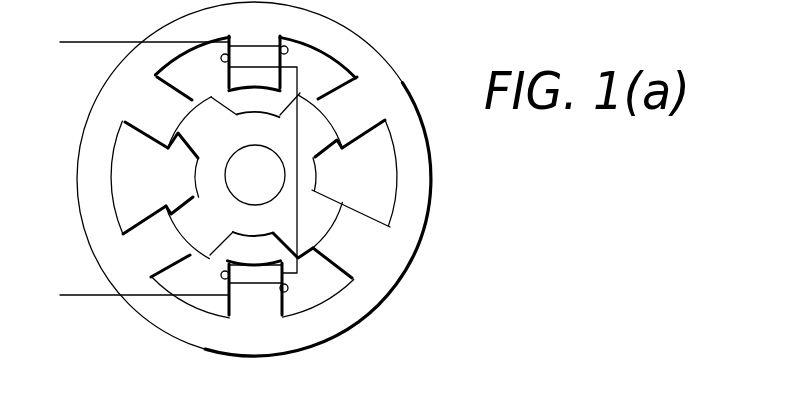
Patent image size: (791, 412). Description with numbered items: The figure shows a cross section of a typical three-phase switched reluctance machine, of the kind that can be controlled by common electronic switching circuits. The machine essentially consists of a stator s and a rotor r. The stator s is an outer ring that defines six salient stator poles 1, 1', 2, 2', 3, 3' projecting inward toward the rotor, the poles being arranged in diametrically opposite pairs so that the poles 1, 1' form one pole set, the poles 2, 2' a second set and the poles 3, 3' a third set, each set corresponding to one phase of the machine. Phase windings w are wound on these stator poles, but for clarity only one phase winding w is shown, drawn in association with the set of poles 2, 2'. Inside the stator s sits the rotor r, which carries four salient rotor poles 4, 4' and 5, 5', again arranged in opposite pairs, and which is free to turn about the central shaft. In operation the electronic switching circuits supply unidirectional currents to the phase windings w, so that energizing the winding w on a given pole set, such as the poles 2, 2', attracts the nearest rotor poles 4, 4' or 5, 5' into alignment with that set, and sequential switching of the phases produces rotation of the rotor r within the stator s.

The salient stator pole 1 is at (158, 112).
The salient stator pole 2 is at (254, 47).
The salient stator pole 3 is at (351, 112).
The salient stator pole 1' is at (351, 234).
The salient stator pole 2' is at (255, 298).
The salient stator pole 3' is at (156, 241).
The salient rotor pole 4 is at (310, 125).
The salient rotor pole 5 is at (307, 227).
The salient rotor pole 4' is at (199, 228).
The salient rotor pole 5' is at (202, 127).
The stator s is at (383, 105).
The rotor r is at (303, 177).
The phase winding w is at (300, 268).